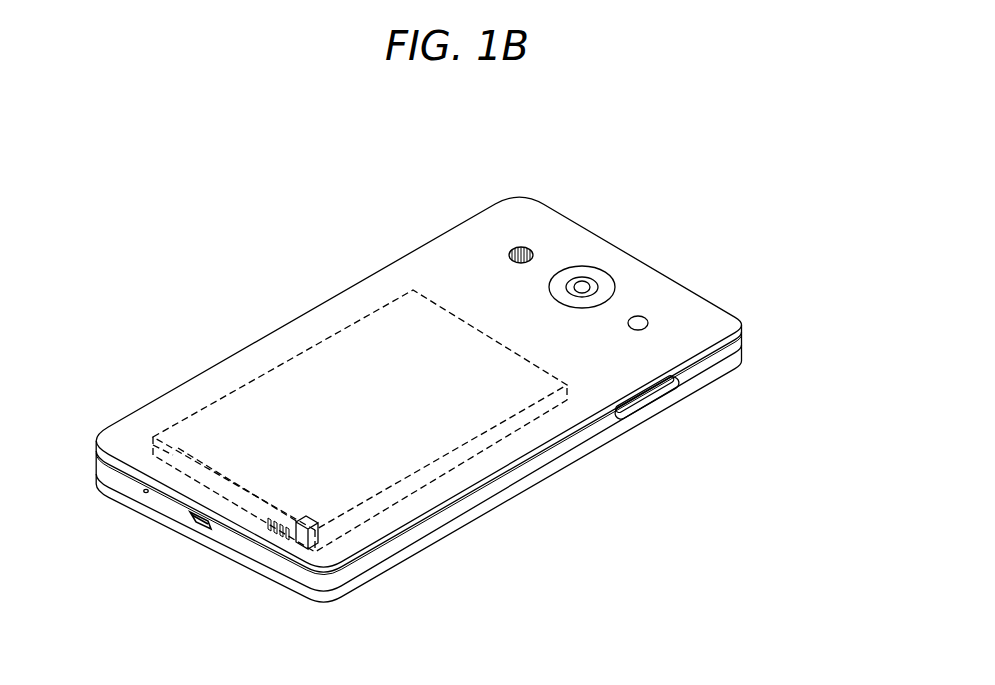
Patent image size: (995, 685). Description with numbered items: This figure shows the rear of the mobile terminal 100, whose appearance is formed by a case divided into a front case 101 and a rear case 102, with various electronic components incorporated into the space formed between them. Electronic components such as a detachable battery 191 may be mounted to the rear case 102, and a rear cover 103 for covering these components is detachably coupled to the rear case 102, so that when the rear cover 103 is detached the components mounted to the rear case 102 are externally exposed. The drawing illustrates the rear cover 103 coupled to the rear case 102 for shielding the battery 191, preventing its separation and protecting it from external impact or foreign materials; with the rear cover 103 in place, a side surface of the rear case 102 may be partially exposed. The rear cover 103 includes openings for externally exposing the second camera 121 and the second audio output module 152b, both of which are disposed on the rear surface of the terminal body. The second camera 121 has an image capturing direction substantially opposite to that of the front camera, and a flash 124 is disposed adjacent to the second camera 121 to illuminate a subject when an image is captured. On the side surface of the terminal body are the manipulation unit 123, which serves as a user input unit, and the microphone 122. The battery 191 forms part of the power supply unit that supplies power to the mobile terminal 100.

The mobile terminal 100 is at (276, 294).
The front case 101 is at (742, 356).
The rear case 102 is at (742, 340).
The rear cover 103 is at (742, 327).
The second camera 121 is at (583, 286).
The microphone 122 is at (143, 494).
The manipulation unit 123 is at (638, 407).
The flash 124 is at (647, 318).
The second audio output module 152b is at (531, 250).
The battery 191 is at (263, 374).